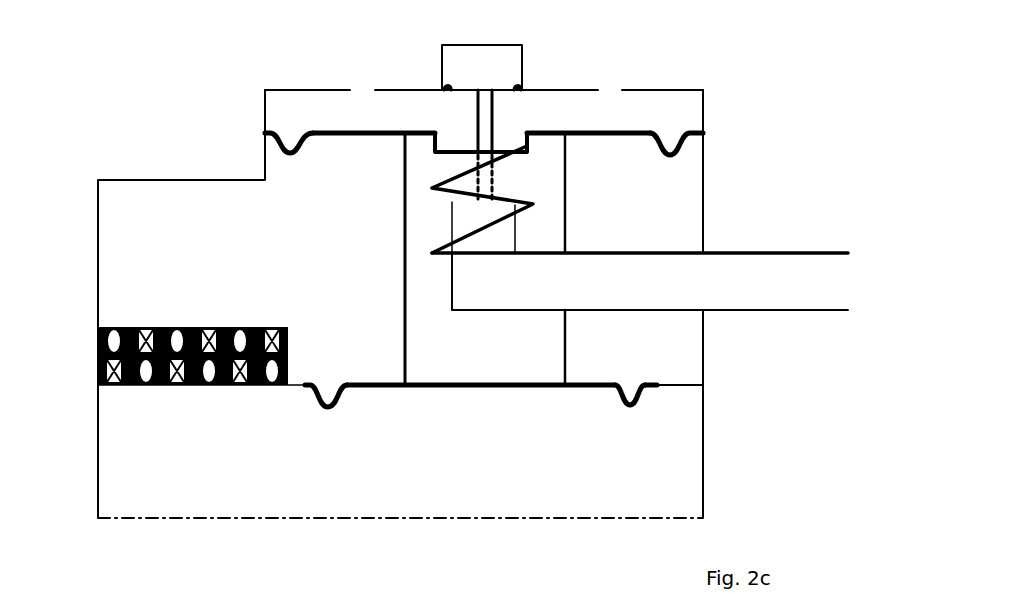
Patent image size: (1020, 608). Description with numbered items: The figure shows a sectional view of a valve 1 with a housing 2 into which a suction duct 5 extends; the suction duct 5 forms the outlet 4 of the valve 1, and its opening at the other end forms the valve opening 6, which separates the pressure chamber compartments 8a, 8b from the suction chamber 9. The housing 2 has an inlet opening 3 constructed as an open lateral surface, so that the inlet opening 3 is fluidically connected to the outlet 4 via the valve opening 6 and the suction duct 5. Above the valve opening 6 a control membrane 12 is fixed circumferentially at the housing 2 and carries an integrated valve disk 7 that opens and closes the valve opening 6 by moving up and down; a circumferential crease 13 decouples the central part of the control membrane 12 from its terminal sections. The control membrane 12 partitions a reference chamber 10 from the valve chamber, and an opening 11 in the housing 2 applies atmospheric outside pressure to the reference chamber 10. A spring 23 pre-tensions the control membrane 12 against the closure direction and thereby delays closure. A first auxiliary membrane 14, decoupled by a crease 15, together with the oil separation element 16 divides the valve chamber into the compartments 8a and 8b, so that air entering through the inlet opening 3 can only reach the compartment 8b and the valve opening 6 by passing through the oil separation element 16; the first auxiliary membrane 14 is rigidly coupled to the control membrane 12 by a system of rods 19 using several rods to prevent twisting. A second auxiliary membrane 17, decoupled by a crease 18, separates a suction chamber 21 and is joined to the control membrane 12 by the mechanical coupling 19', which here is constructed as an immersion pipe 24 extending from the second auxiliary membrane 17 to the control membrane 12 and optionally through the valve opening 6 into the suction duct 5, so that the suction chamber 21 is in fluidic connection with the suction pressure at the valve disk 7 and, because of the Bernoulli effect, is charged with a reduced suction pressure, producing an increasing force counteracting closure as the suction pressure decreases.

The valve 1 is at (768, 412).
The housing 2 is at (98, 245).
The inlet opening 3 is at (333, 518).
The outlet 4 is at (785, 280).
The suction duct 5 is at (636, 288).
The valve opening 6 is at (452, 205).
The valve disk 7 is at (503, 158).
The pressure chamber compartment 8a is at (180, 425).
The pressure chamber compartment 8b is at (172, 258).
The suction chamber 9 is at (710, 288).
The reference chamber 10 is at (690, 110).
The opening 11 is at (365, 88).
The control membrane 12 is at (365, 136).
The crease 13 is at (287, 153).
The first auxiliary membrane 14 is at (480, 388).
The crease 15 is at (307, 392).
The oil separation element 16 is at (97, 390).
The second auxiliary membrane 17 is at (497, 91).
The crease 18 is at (440, 80).
The system of rods 19 is at (484, 259).
The mechanical coupling 19' is at (472, 126).
The suction chamber 21 is at (455, 45).
The spring 23 is at (533, 204).
The immersion pipe 24 is at (492, 115).